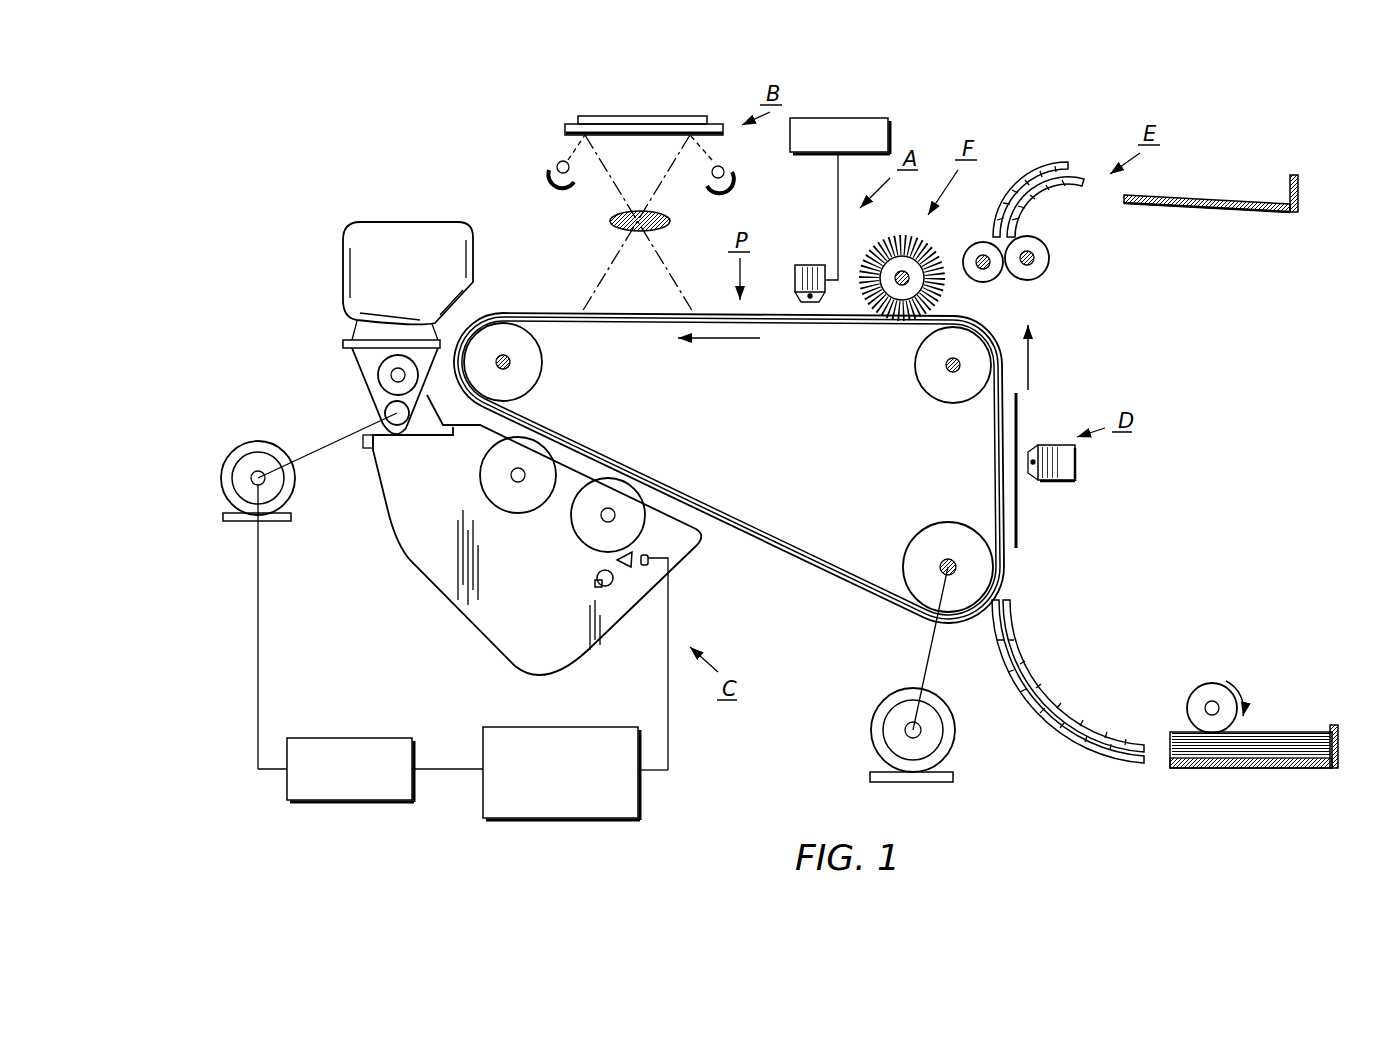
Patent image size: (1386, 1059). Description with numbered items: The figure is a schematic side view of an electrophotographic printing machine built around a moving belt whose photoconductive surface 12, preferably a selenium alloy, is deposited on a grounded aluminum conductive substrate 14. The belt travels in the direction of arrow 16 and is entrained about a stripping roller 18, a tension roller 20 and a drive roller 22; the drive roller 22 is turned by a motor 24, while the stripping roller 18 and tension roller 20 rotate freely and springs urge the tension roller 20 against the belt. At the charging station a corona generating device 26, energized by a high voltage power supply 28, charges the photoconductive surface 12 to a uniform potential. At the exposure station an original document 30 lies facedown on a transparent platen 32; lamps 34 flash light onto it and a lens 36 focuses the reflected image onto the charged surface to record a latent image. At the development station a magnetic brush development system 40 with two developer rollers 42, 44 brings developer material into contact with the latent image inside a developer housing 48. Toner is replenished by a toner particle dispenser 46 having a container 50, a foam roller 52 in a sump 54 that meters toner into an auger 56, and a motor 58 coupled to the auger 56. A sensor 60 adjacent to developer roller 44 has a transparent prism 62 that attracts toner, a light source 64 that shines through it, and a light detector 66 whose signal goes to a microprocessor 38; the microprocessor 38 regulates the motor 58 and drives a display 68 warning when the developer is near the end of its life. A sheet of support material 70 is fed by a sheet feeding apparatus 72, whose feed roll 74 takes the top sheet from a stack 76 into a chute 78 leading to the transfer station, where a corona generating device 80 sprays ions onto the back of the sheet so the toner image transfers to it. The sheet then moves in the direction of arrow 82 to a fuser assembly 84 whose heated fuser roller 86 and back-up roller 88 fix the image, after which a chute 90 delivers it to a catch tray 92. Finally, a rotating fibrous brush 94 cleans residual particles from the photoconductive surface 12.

The photoconductive surface 12 is at (720, 313).
The conductive substrate 14 is at (824, 322).
The arrow 16 is at (718, 341).
The stripping roller 18 is at (922, 378).
The tension roller 20 is at (532, 371).
The drive roller 22 is at (917, 534).
The motor 24 is at (947, 742).
The corona generating device 26 is at (807, 263).
The high voltage power supply 28 is at (890, 134).
The original document 30 is at (575, 118).
The transparent platen 32 is at (565, 130).
The lamps 34 is at (569, 183).
The lens 36 is at (612, 225).
The microprocessor 38 is at (640, 818).
The magnetic brush development system 40 is at (393, 569).
The magnetic brush developer roller 42 is at (487, 488).
The magnetic brush developer roller 44 is at (580, 527).
The toner particle dispenser 46 is at (417, 198).
The developer housing 48 is at (388, 516).
The container 50 is at (344, 268).
The foam roller 52 is at (378, 375).
The sump 54 is at (374, 397).
The auger 56 is at (386, 415).
The motor 58 is at (263, 443).
The sensor 60 is at (668, 548).
The transparent prism 62 is at (633, 570).
The light source 64 is at (597, 584).
The light detector 66 is at (652, 563).
The display 68 is at (397, 800).
The sheet of support material 70 is at (1019, 514).
The sheet feeding apparatus 72 is at (1250, 676).
The feed roll 74 is at (1210, 692).
The stack 76 is at (1290, 732).
The chute 78 is at (1080, 712).
The corona generating device 80 is at (1068, 473).
The arrow 82 is at (1030, 369).
The fuser assembly 84 is at (1062, 244).
The heated fuser roller 86 is at (975, 246).
The back-up roller 88 is at (1045, 264).
The chute 90 is at (1055, 175).
The catch tray 92 is at (1214, 202).
The fibrous brush 94 is at (897, 238).